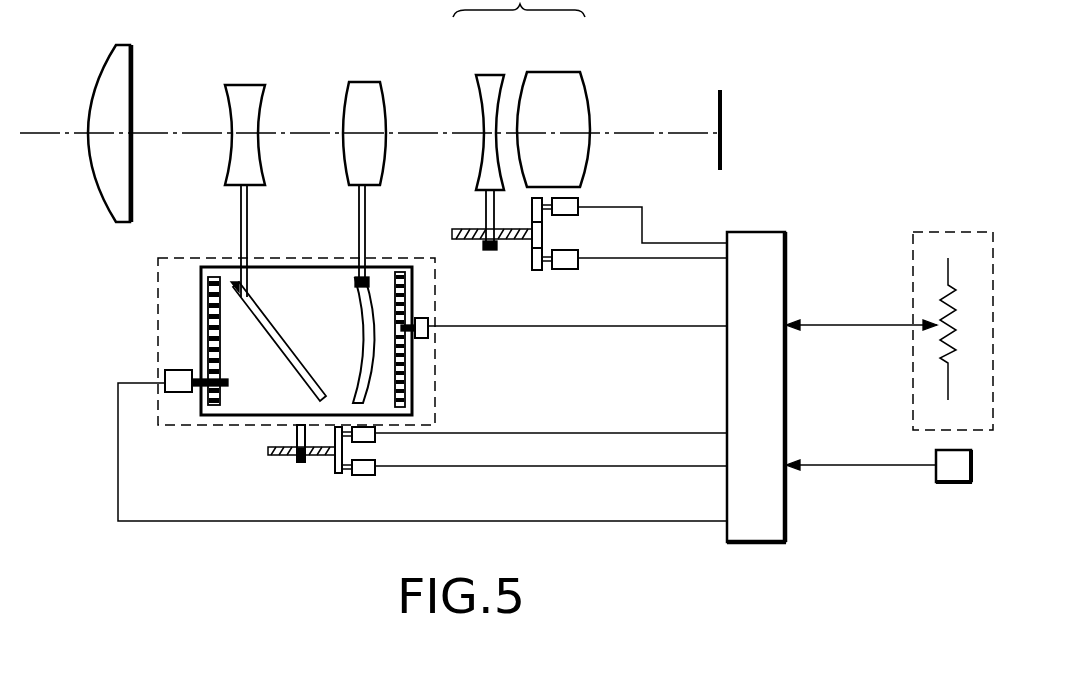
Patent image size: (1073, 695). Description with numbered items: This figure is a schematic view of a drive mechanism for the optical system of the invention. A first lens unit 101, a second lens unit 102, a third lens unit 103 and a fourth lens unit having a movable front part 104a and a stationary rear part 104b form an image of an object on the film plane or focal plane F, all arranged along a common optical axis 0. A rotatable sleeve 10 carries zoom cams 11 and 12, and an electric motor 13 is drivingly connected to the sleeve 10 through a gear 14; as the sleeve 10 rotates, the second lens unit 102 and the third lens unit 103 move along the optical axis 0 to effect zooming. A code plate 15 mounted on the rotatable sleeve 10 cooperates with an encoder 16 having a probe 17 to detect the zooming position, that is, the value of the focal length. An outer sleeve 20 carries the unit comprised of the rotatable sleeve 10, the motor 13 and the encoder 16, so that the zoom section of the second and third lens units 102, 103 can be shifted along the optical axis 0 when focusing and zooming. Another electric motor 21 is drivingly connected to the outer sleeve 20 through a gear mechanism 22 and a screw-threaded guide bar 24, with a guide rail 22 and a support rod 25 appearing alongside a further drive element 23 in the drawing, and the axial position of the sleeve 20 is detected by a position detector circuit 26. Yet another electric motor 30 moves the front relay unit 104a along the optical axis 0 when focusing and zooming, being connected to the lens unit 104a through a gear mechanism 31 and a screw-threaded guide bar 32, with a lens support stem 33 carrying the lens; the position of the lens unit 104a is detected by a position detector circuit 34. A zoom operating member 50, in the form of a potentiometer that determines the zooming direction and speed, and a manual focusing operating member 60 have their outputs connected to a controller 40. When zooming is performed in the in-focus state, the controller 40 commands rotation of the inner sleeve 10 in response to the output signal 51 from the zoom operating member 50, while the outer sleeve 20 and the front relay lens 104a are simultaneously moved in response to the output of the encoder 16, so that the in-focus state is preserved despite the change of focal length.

The optical axis 0 is at (41, 138).
The first lens unit 101 is at (133, 58).
The second lens unit 102 is at (248, 85).
The third lens unit 103 is at (364, 82).
The front part of fourth lens unit 104a is at (491, 75).
The rear part of fourth lens unit 104b is at (556, 72).
The focal plane F is at (722, 108).
The rotatable sleeve 10 is at (323, 273).
The zoom cam 11 is at (264, 306).
The zoom cam 12 is at (368, 300).
The electric motor 13 is at (433, 313).
The gear 14 is at (401, 297).
The code plate 15 is at (214, 277).
The encoder 16 is at (180, 370).
The probe 17 is at (226, 381).
The outer sleeve 20 is at (440, 377).
The electric motor 21 is at (362, 477).
The gear mechanism 22 is at (337, 474).
The motor 23 is at (344, 451).
The screw-threaded guide bar 24 is at (268, 450).
The support rod 25 is at (299, 463).
The position detector circuit 26 is at (432, 428).
The electric motor 30 is at (572, 270).
The gear mechanism 31 is at (541, 270).
The screw-threaded guide bar 32 is at (545, 238).
The lens support stem 33 is at (486, 212).
The position detector circuit 34 is at (580, 200).
The controller 40 is at (786, 283).
The zoom operating member 50 is at (946, 232).
The output signal 51 is at (848, 326).
The operating member 60 is at (950, 484).